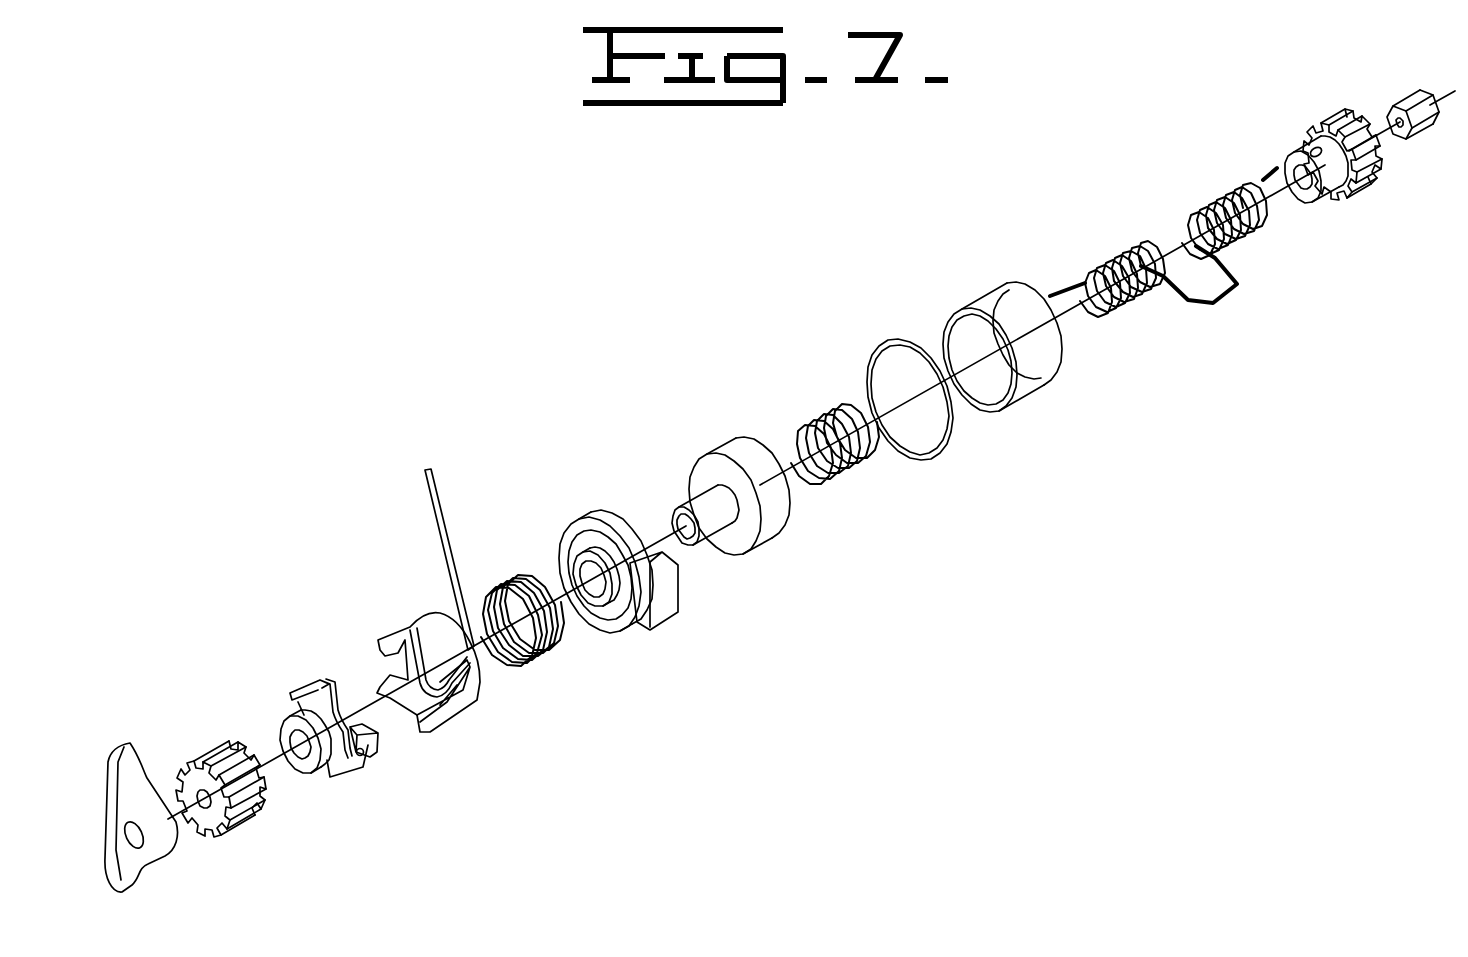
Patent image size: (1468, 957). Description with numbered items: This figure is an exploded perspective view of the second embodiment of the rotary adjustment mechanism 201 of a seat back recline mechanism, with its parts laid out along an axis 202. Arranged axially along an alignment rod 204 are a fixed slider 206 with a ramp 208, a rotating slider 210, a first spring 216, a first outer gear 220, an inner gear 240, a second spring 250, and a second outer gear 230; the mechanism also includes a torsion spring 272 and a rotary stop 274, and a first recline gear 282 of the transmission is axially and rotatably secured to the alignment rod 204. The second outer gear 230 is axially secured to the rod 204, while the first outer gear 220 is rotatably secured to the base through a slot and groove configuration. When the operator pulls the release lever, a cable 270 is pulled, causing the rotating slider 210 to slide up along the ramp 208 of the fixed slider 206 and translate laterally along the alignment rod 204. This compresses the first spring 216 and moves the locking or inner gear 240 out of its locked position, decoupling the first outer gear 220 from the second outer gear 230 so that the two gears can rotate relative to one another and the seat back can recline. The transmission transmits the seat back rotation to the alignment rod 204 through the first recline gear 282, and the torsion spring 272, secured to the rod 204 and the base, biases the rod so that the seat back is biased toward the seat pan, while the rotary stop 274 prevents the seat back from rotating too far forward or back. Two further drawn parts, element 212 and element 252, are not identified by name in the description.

The rotary adjustment mechanism 201 is at (700, 334).
The axis 202 is at (190, 820).
The alignment rod 204 is at (1400, 140).
The fixed slider 206 is at (350, 770).
The ramp 208 is at (300, 697).
The rotating slider 210 is at (470, 718).
The clip tab 212 is at (392, 643).
The first spring 216 is at (503, 575).
The first outer gear 220 is at (578, 507).
The second outer gear 230 is at (966, 290).
The inner gear 240 is at (702, 458).
The second spring 250 is at (798, 407).
The ring 252 is at (876, 352).
The cable 270 is at (427, 517).
The torsion spring 272 is at (1107, 258).
The rotary stop 274 is at (133, 748).
The first recline gear 282 is at (203, 752).